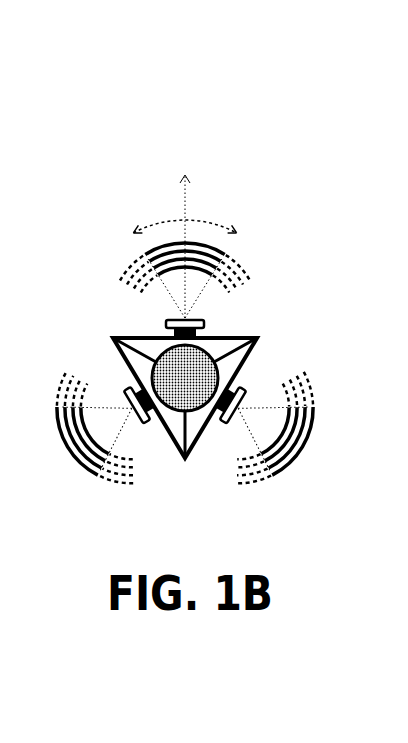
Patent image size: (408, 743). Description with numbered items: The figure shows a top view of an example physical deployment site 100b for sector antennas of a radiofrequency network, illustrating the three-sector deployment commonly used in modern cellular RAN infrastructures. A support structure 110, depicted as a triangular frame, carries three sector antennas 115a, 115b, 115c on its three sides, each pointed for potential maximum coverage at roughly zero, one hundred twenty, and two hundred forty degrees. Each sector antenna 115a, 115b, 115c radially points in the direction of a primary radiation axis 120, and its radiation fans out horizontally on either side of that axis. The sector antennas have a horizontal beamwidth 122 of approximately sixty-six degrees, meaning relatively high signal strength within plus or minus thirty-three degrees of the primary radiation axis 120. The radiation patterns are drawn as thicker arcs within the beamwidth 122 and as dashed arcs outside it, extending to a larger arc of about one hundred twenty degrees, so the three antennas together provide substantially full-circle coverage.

The physical deployment site 100b is at (128, 82).
The support structure 110 is at (150, 367).
The sector antenna 115a is at (197, 321).
The sector antenna 115b is at (244, 385).
The sector antenna 115c is at (143, 422).
The primary radiation axis 120 is at (184, 232).
The horizontal beamwidth 122 is at (225, 228).